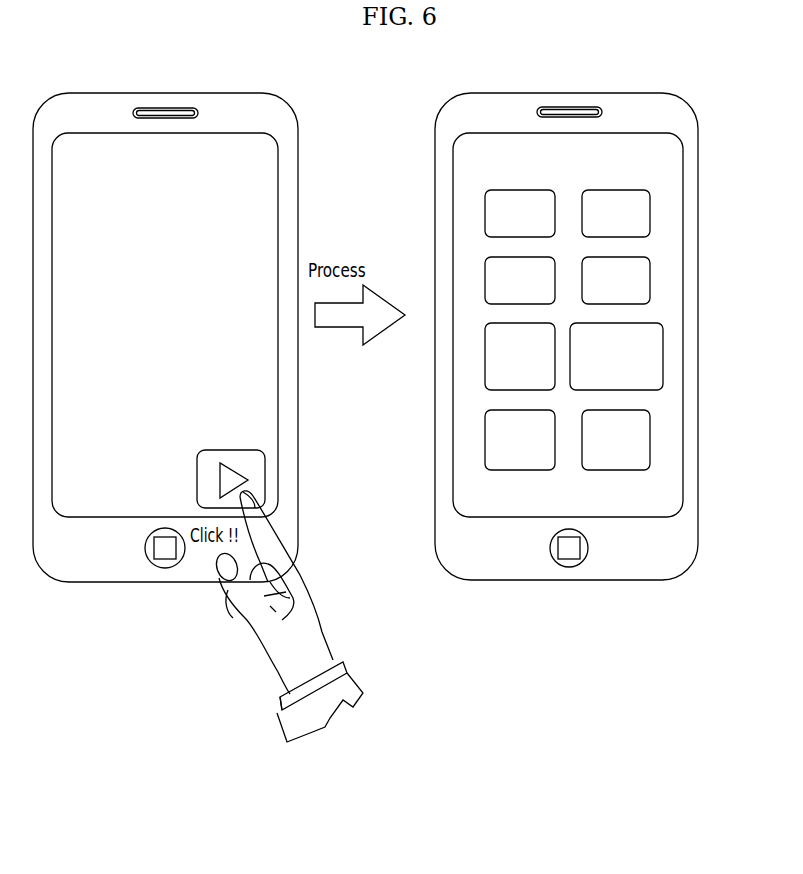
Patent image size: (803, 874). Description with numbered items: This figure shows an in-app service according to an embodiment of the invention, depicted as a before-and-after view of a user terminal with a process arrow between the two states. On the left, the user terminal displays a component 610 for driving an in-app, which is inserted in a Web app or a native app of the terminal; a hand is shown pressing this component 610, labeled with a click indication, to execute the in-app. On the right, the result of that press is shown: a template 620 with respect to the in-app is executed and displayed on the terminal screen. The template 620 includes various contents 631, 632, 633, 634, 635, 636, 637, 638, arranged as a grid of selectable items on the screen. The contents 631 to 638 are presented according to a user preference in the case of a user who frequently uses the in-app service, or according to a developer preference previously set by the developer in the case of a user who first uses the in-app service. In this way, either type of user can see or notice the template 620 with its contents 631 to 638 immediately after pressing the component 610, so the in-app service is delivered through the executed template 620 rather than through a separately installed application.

The component for driving an in-app 610 is at (265, 474).
The template 620 is at (505, 133).
The contents 631 is at (485, 214).
The contents 632 is at (485, 280).
The contents 633 is at (485, 357).
The contents 634 is at (485, 434).
The contents 635 is at (650, 212).
The contents 636 is at (650, 277).
The contents 637 is at (663, 355).
The contents 638 is at (650, 428).